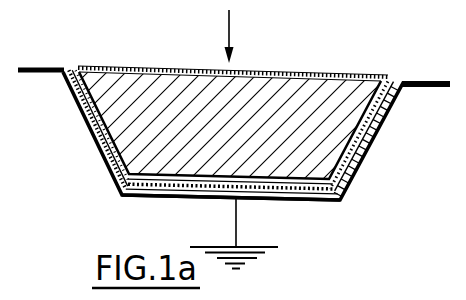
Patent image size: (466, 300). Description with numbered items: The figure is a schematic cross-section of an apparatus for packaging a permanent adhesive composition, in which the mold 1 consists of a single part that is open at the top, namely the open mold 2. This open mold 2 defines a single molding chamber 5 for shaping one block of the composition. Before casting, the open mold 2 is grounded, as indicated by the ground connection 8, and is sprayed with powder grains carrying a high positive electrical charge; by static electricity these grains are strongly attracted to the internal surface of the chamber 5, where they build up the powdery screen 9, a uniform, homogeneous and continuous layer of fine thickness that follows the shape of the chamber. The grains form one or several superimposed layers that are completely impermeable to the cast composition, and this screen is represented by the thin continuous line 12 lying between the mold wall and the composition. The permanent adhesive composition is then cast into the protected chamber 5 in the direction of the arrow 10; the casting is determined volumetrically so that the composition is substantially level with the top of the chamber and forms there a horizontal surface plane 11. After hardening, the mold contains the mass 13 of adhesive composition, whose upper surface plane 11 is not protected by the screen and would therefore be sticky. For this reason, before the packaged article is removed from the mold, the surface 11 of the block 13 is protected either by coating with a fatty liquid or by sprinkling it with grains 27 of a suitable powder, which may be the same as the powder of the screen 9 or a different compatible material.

The mold 1 is at (78, 131).
The open mold 2 is at (103, 160).
The molding chamber 5 is at (147, 190).
The grounding 8 is at (236, 229).
The powdery screen 9 is at (314, 202).
The casting arrow 10 is at (229, 32).
The surface plane 11 is at (336, 72).
The thin continuous line 12 is at (370, 138).
The mass of adhesive composition 13 is at (103, 88).
The grains of powder 27 is at (127, 66).